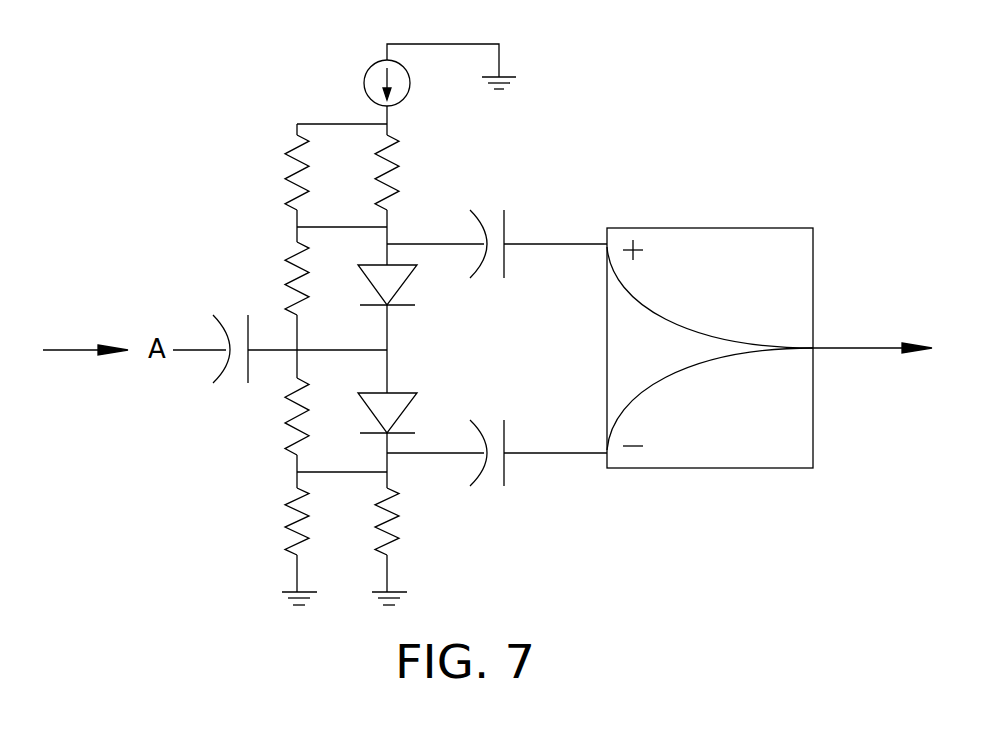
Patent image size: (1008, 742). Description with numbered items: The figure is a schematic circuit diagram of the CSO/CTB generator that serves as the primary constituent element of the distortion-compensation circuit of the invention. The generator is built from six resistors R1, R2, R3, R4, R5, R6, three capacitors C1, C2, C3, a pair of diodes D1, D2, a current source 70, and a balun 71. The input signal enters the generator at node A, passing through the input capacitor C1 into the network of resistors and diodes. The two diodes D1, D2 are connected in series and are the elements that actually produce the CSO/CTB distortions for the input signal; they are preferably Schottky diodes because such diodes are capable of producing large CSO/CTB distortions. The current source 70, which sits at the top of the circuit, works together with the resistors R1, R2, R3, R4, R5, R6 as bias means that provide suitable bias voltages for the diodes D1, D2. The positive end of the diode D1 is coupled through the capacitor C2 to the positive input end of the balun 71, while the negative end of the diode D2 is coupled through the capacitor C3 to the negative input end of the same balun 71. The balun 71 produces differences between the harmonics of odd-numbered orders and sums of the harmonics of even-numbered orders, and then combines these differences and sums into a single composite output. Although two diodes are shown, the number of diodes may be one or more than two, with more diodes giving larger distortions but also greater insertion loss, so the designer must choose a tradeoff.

The current source 70 is at (371, 67).
The balun 71 is at (697, 228).
The resistor R1 is at (273, 278).
The resistor R2 is at (273, 416).
The resistor R3 is at (273, 172).
The resistor R4 is at (273, 521).
The resistor R5 is at (413, 172).
The resistor R6 is at (413, 521).
The capacitor C1 is at (203, 366).
The capacitor C2 is at (502, 226).
The capacitor C3 is at (502, 475).
The diode D1 is at (411, 295).
The diode D2 is at (411, 403).